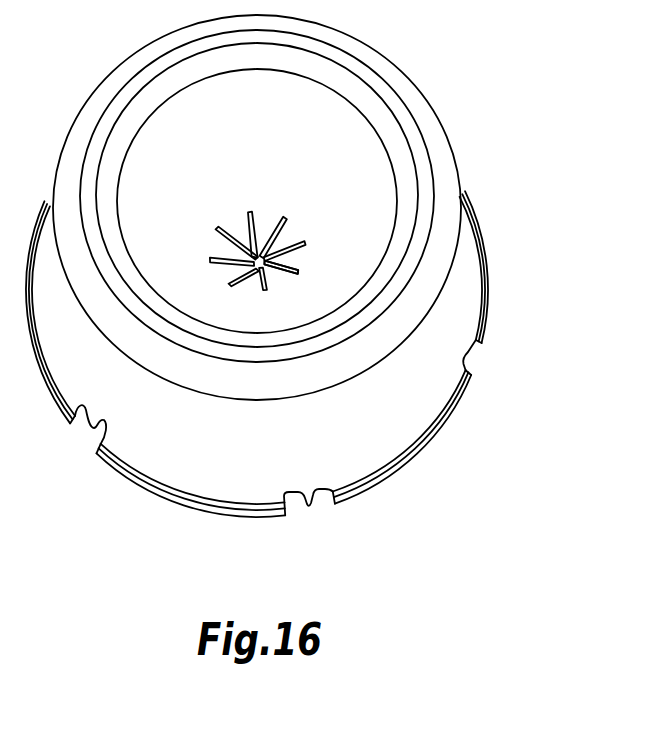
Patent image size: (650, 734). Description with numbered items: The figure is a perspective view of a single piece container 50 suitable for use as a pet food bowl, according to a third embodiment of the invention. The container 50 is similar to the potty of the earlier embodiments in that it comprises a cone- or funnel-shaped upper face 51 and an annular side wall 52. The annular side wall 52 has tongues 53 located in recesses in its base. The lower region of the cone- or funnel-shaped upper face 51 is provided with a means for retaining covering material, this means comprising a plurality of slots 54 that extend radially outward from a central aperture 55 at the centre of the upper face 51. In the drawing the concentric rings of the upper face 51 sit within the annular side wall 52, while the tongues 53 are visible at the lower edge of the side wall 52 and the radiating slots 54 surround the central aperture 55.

The container 50 is at (512, 118).
The upper face 51 is at (196, 116).
The annular side wall 52 is at (400, 413).
The tongues 53 is at (306, 506).
The slots 54 is at (218, 262).
The central aperture 55 is at (302, 258).